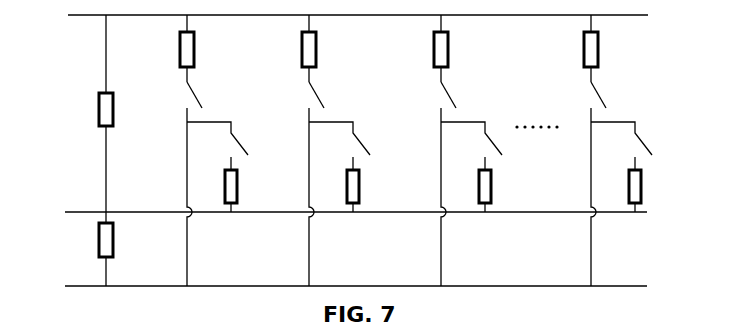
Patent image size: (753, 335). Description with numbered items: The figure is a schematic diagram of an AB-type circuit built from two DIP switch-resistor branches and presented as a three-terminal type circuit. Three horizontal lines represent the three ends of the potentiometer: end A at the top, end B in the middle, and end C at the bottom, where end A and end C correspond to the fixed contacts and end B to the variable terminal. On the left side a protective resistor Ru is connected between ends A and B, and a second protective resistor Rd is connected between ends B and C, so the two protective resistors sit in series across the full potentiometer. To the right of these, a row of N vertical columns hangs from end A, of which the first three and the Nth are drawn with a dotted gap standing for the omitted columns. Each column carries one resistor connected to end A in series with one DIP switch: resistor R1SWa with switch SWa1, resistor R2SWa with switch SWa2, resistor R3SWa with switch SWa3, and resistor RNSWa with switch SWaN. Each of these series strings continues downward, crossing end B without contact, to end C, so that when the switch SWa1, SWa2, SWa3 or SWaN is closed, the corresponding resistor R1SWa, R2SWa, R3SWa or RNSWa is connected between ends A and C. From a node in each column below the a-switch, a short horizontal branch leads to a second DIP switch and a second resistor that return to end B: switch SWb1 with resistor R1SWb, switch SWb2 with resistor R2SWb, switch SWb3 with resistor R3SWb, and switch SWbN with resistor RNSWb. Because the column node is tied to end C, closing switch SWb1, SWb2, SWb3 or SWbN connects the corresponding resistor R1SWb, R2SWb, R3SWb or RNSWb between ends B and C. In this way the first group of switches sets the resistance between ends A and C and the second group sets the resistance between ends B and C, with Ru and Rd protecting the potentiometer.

The end A of the potentiometer A is at (347, 20).
The end B of the potentiometer B is at (346, 194).
The end C of the potentiometer C is at (346, 274).
The protective resistor Ru is at (90, 113).
The protective resistor Rd is at (90, 249).
The resistor R1SWa is at (157, 48).
The DIP switch SWa1 is at (161, 97).
The DIP switch SWb1 is at (236, 138).
The resistor R1SWb is at (199, 184).
The resistor R2SWa is at (279, 48).
The DIP switch SWa2 is at (283, 97).
The DIP switch SWb2 is at (358, 138).
The resistor R2SWb is at (321, 184).
The resistor R3SWa is at (411, 48).
The DIP switch SWa3 is at (415, 97).
The DIP switch SWb3 is at (490, 138).
The resistor R3SWb is at (453, 184).
The resistor RNSWa is at (558, 48).
The DIP switch SWaN is at (562, 97).
The DIP switch SWbN is at (628, 138).
The resistor RNSWb is at (602, 184).